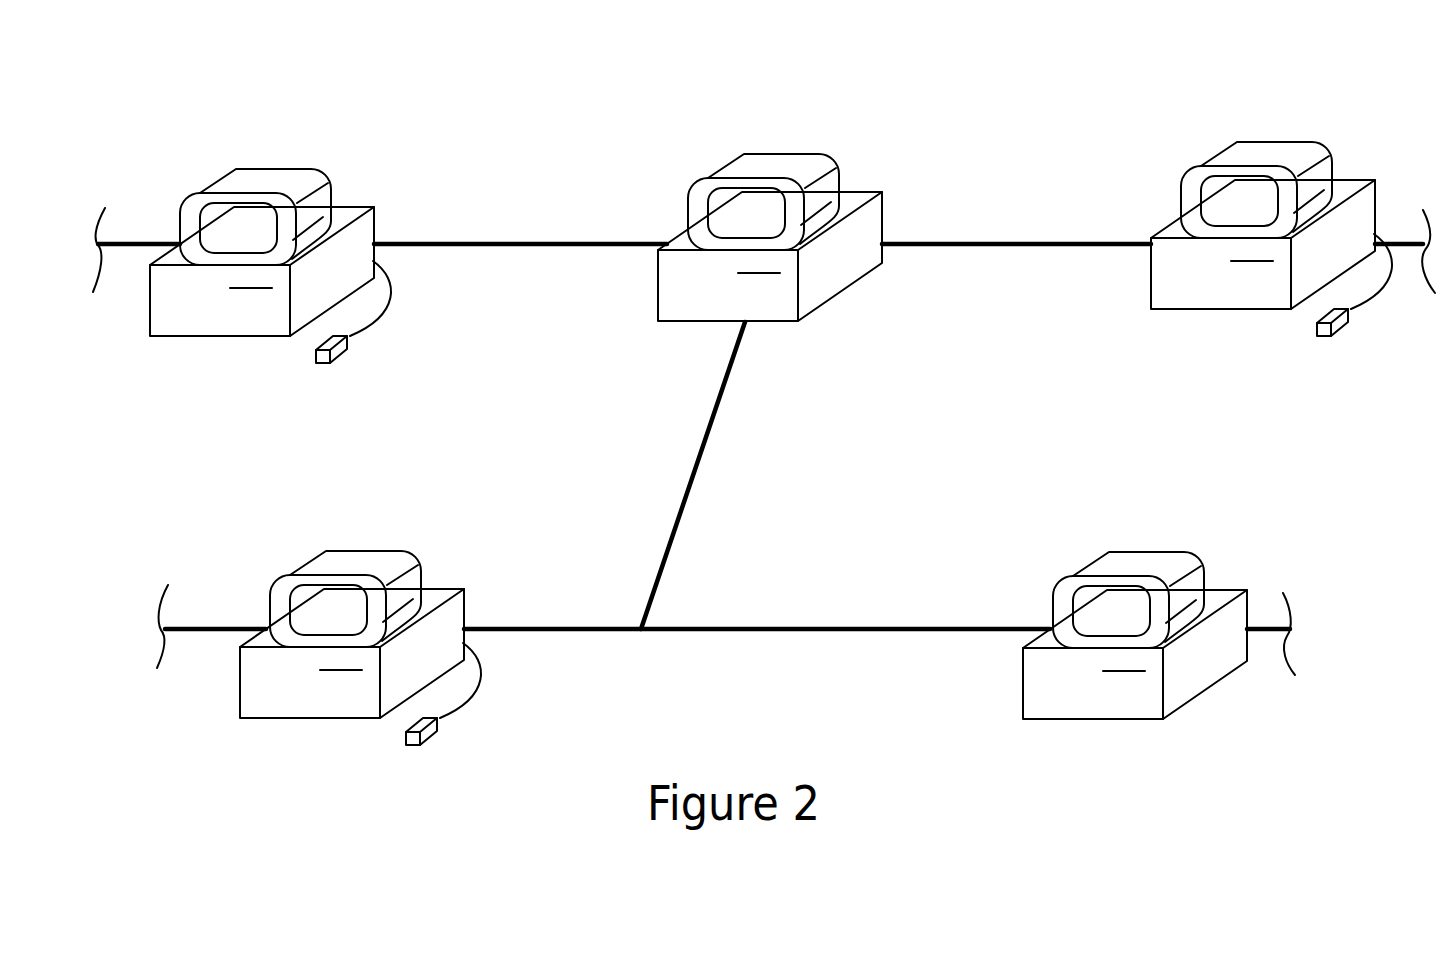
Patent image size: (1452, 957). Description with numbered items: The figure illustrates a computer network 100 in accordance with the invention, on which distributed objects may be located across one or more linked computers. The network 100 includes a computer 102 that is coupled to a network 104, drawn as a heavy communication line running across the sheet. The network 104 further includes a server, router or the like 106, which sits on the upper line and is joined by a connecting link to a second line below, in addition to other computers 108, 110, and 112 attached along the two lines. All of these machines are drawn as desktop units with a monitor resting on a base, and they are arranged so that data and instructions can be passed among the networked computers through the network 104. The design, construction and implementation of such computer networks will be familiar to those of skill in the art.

The network 100 is at (197, 114).
The computer 102 is at (358, 200).
The network 104 is at (470, 247).
The server, router or the like 106 is at (863, 187).
The computer 108 is at (443, 585).
The computer 110 is at (1150, 287).
The computer 112 is at (1222, 585).